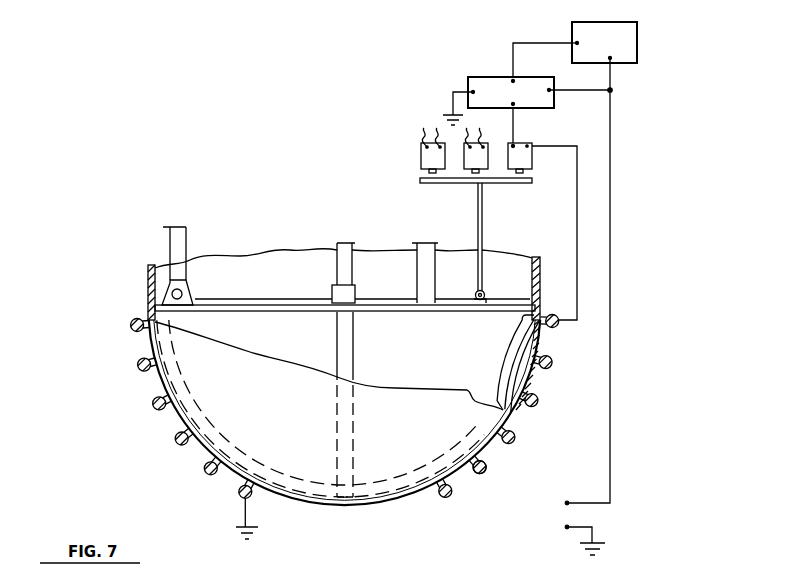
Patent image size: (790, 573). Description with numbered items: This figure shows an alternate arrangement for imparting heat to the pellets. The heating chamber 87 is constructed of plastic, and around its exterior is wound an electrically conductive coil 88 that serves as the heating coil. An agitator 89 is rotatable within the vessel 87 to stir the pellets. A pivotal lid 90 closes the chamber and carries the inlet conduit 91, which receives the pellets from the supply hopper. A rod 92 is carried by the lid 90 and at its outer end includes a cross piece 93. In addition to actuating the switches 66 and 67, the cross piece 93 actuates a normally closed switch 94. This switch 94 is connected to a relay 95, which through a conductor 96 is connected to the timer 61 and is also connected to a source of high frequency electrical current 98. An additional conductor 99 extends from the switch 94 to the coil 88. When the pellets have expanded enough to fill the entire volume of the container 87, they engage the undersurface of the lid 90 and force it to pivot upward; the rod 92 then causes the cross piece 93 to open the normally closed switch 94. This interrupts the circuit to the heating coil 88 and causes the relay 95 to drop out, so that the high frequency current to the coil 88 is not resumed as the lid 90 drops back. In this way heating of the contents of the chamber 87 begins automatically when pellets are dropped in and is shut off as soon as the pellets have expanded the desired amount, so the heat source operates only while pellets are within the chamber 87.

The timer 61 is at (638, 36).
The switch 66 is at (428, 161).
The switch 67 is at (484, 153).
The heating chamber 87 is at (306, 505).
The electrically conductive coil 88 is at (488, 467).
The agitator 89 is at (522, 336).
The pivotal lid 90 is at (402, 307).
The inlet conduit 91 is at (433, 249).
The rod 92 is at (478, 237).
The cross piece 93 is at (513, 184).
The normally closed switch 94 is at (517, 144).
The relay 95 is at (504, 78).
The conductor 96 is at (546, 43).
The source of high frequency electrical current 98 is at (613, 164).
The conductor 99 is at (577, 205).